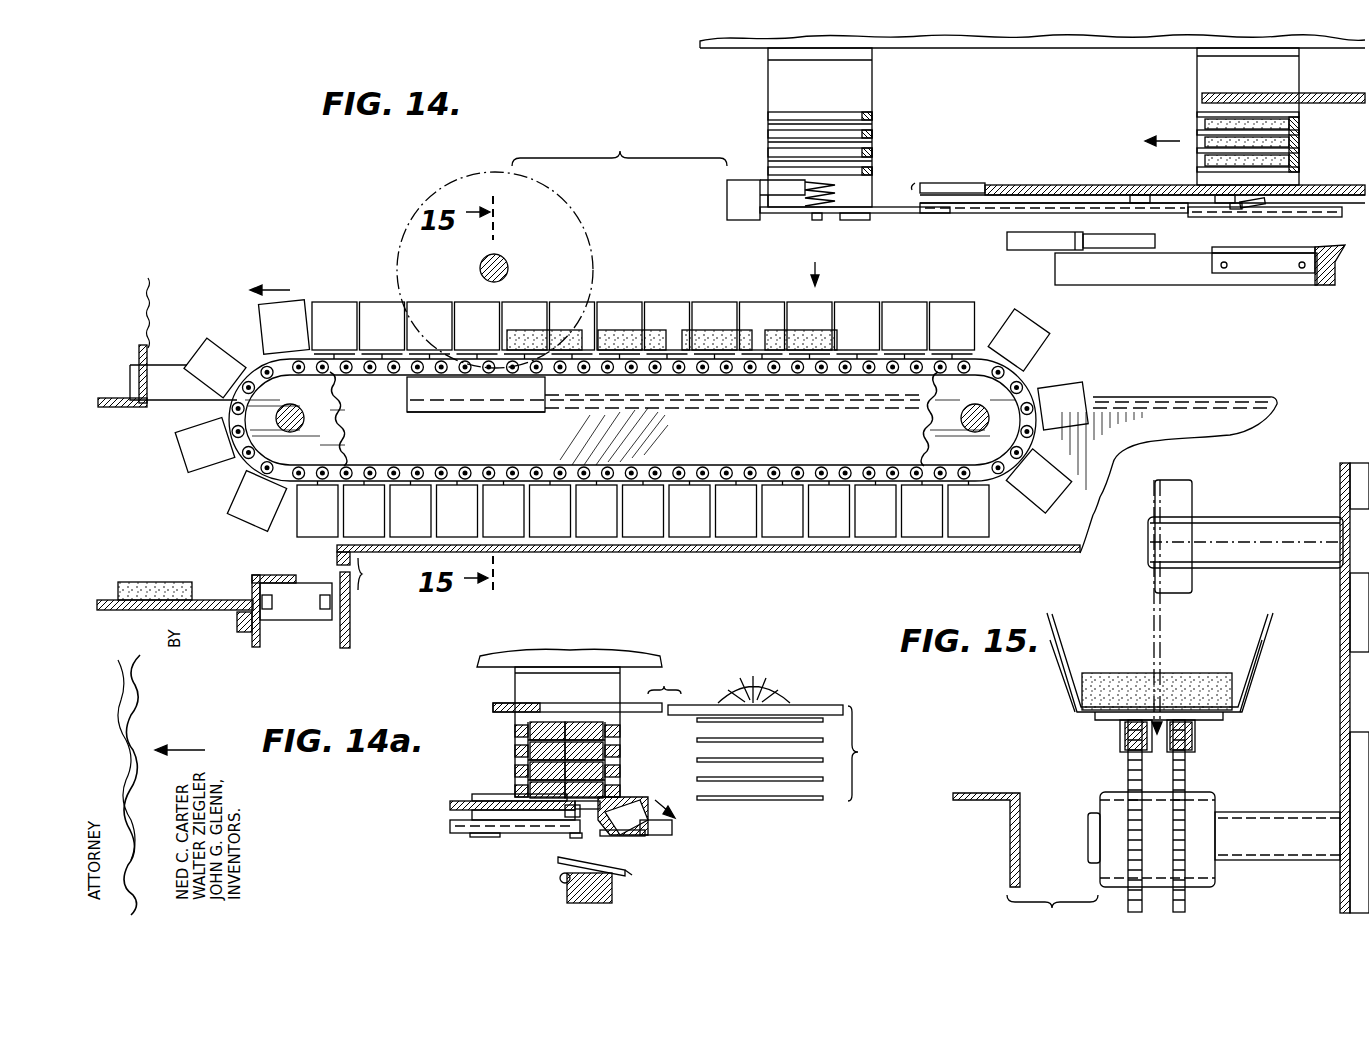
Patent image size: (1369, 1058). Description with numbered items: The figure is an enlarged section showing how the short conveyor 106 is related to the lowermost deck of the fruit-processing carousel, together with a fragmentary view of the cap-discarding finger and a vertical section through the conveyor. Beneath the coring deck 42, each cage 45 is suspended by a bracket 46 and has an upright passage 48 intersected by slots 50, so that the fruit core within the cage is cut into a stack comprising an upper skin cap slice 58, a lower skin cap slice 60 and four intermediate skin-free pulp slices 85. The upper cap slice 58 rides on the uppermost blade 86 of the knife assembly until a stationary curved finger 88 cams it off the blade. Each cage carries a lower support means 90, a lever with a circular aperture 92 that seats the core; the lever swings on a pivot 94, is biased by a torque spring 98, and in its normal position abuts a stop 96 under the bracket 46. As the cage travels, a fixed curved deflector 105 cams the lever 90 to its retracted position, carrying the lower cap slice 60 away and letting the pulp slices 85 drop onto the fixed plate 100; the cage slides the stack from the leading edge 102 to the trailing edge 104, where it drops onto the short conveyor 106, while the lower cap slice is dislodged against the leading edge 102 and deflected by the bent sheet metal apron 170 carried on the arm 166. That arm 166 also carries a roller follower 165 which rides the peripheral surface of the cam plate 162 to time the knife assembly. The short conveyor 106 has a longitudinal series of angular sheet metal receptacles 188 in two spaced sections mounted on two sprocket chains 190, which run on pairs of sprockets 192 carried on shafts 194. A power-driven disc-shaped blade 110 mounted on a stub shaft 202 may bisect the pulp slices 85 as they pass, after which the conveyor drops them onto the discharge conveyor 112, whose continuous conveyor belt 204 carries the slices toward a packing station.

In FIG. 14, the coring deck 42 is at (1020, 48).
In FIG. 14, the cage 45 is at (872, 135).
In FIG. 14A, the cage 45 is at (515, 728).
In FIG. 14, the bracket 46 is at (872, 90).
In FIG. 14A, the upright passage 48 is at (515, 780).
In FIG. 14, the slots 50 is at (768, 126).
In FIG. 14A, the slots 50 is at (515, 742).
In FIG. 14A, the upper skin cap slice 58 is at (760, 690).
In FIG. 14A, the lower skin cap slice 60 is at (635, 797).
In FIG. 14, the skin-free pulp slices 85 is at (1210, 127).
In FIG. 14A, the skin-free pulp slices 85 is at (580, 730).
In FIG. 15, the skin-free pulp slices 85 is at (1195, 675).
In FIG. 14A, the uppermost blade 86 is at (700, 722).
In FIG. 14, the curved finger 88 is at (1355, 103).
In FIG. 14A, the curved finger 88 is at (823, 705).
In FIG. 14, the lower support means 90 is at (780, 213).
In FIG. 14A, the lower support means 90 is at (590, 810).
In FIG. 14A, the circular aperture 92 is at (655, 835).
In FIG. 14, the pivot 94 is at (817, 220).
In FIG. 14, the stop 96 is at (855, 220).
In FIG. 14, the torque spring 98 is at (838, 192).
In FIG. 14, the fixed plate 100 is at (1112, 183).
In FIG. 14A, the fixed plate 100 is at (450, 806).
In FIG. 14A, the leading edge 102 is at (575, 817).
In FIG. 14, the trailing edge 104 is at (915, 183).
In FIG. 14, the curved deflector 105 is at (1320, 220).
In FIG. 14A, the curved deflector 105 is at (468, 840).
In FIG. 14, the short conveyor 106 is at (862, 302).
In FIG. 14A, the short conveyor 106 is at (612, 888).
In FIG. 15, the short conveyor 106 is at (1255, 680).
In FIG. 14, the disc-shaped blade 110 is at (595, 243).
In FIG. 15, the disc-shaped blade 110 is at (1152, 625).
In FIG. 14, the discharge conveyor 112 is at (140, 612).
In FIG. 14, the cam plate 162 is at (1007, 241).
In FIG. 14, the roller follower 165 is at (1060, 255).
In FIG. 14, the arm 166 is at (1222, 273).
In FIG. 14A, the arm 166 is at (612, 888).
In FIG. 14, the sheet metal apron 170 is at (1300, 265).
In FIG. 14A, the sheet metal apron 170 is at (560, 865).
In FIG. 14, the receptacles 188 is at (700, 302).
In FIG. 15, the receptacles 188 is at (1060, 672).
In FIG. 14, the sprocket chains 190 is at (548, 465).
In FIG. 15, the sprocket chains 190 is at (1120, 735).
In FIG. 14, the sprockets 192 is at (343, 438).
In FIG. 15, the sprockets 192 is at (1128, 768).
In FIG. 14, the shafts 194 is at (306, 397).
In FIG. 15, the shafts 194 is at (1255, 812).
In FIG. 14, the stub shaft 202 is at (508, 262).
In FIG. 15, the stub shaft 202 is at (1265, 517).
In FIG. 14, the conveyor belt 204 is at (205, 600).